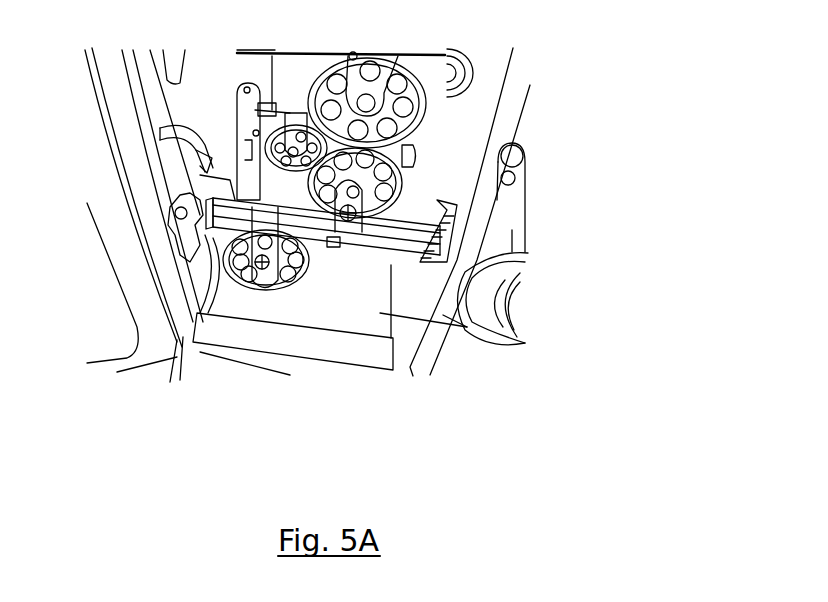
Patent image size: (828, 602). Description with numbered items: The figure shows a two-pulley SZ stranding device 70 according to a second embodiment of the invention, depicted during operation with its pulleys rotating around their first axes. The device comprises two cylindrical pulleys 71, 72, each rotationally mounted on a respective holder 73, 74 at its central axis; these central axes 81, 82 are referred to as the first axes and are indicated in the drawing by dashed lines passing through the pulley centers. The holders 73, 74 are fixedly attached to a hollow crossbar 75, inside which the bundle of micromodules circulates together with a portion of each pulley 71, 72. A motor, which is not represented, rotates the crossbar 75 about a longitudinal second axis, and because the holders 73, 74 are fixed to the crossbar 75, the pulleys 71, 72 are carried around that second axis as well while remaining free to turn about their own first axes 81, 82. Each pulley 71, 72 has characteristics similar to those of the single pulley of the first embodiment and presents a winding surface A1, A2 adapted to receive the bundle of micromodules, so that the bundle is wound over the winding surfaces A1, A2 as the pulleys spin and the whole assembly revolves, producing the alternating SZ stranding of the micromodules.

The SZ stranding device 70 is at (262, 178).
The winding surface A1 is at (407, 152).
The cylindrical pulley 71 is at (413, 212).
The cylindrical pulley 72 is at (275, 278).
The holder 73 is at (400, 272).
The holder 74 is at (273, 284).
The hollow crossbar 75 is at (177, 360).
The first axis 81 is at (348, 240).
The first axis 82 is at (292, 150).
The winding surface A2 is at (290, 283).